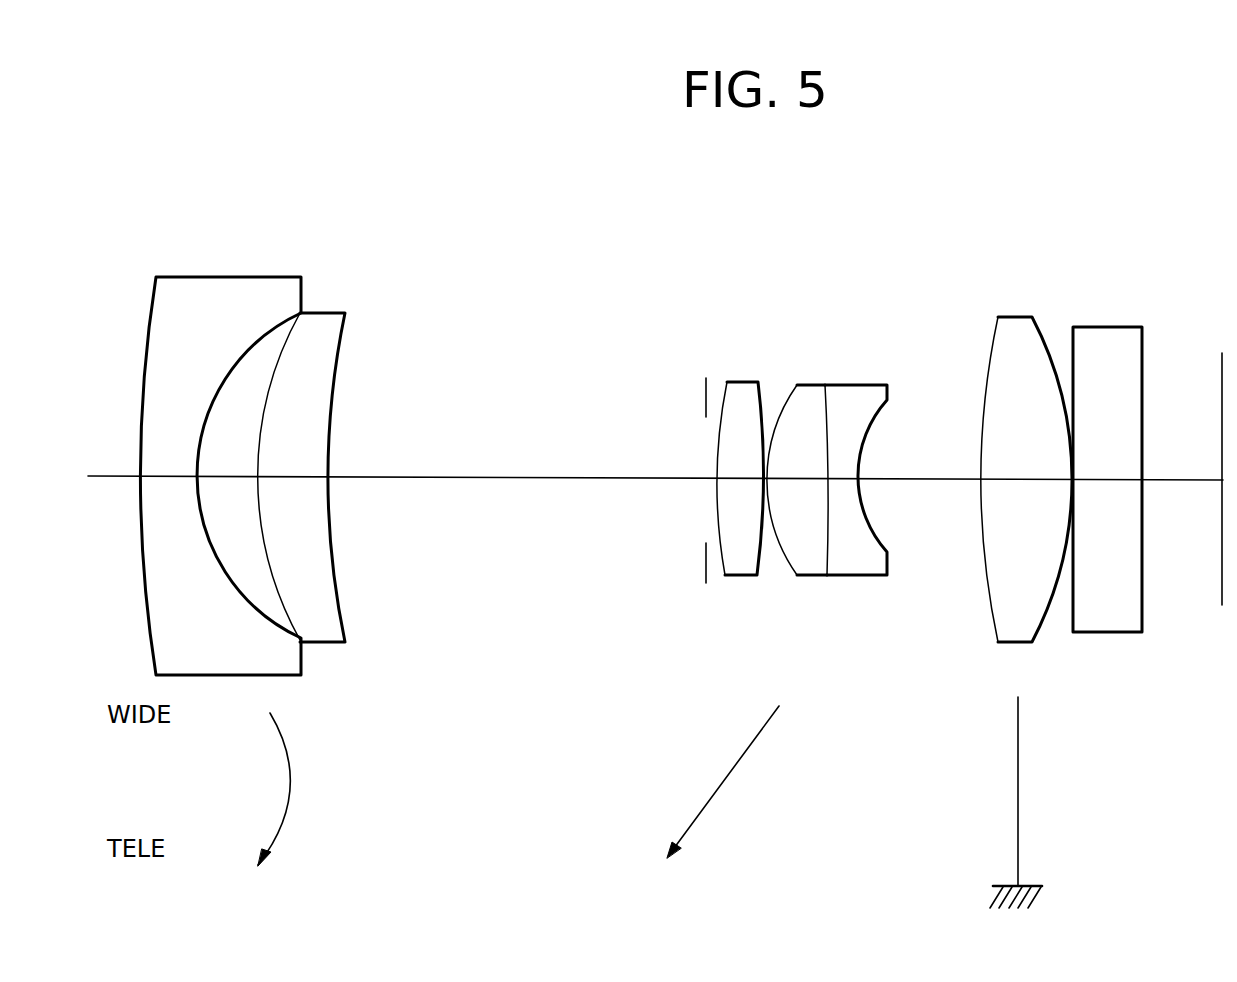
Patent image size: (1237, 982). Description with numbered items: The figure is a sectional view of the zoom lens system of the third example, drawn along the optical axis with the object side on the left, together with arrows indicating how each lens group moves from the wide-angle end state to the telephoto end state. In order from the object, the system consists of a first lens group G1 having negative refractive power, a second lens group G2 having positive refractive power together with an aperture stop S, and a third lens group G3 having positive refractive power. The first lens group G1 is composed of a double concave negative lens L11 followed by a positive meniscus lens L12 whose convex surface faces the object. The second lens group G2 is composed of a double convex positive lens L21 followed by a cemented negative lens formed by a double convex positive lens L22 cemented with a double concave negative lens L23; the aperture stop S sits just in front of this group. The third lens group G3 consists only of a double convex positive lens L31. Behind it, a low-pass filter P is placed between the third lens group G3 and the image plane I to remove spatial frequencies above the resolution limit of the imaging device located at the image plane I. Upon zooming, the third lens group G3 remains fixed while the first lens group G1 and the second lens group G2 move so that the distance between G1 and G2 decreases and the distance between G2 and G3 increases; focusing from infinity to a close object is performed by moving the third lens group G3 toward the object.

The first lens group G1 is at (348, 208).
The double concave negative lens L11 is at (208, 277).
The positive meniscus lens L12 is at (330, 311).
The aperture stop S is at (705, 388).
The second lens group G2 is at (903, 282).
The double convex positive lens L21 is at (745, 382).
The double convex positive lens L22 is at (810, 385).
The double concave negative lens L23 is at (856, 385).
The third lens group G3 is at (1050, 240).
The double convex positive lens L31 is at (1018, 317).
The low-pass filter P is at (1120, 327).
The image plane I is at (1222, 373).